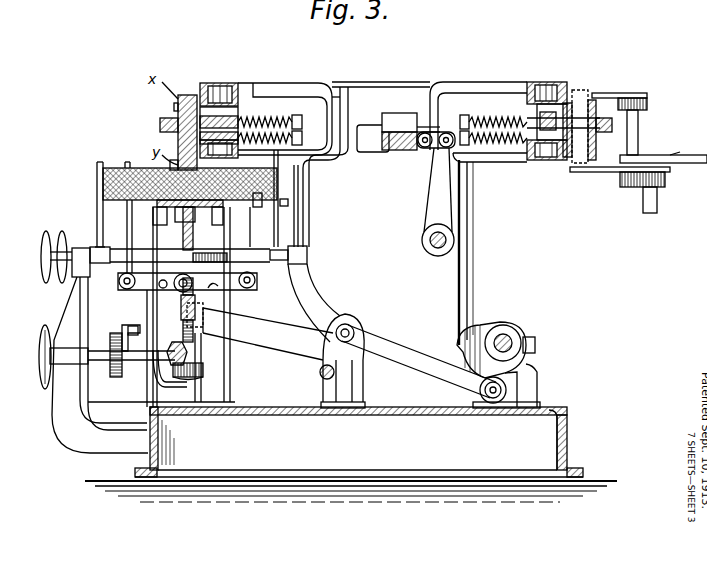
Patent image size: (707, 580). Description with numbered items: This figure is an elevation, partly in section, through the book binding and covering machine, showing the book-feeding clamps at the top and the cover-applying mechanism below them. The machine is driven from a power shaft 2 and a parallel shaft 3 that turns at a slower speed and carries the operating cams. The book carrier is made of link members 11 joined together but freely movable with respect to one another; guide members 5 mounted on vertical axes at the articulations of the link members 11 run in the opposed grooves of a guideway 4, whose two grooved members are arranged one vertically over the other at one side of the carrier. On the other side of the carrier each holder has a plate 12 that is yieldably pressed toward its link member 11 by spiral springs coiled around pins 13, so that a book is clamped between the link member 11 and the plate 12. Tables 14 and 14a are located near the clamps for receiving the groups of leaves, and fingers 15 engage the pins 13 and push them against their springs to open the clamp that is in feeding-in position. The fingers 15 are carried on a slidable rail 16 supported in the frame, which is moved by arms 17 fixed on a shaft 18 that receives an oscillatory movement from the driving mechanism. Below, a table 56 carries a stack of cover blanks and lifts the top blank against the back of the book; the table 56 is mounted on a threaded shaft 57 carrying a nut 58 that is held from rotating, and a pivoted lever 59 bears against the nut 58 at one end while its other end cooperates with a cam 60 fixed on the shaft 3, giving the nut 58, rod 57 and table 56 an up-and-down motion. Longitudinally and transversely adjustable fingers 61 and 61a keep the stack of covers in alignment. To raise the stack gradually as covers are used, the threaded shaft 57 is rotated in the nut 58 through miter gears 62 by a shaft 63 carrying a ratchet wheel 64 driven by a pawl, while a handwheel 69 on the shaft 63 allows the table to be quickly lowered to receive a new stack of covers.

The power shaft 2 is at (320, 374).
The shaft 3 is at (515, 326).
The guideway 4 is at (222, 91).
The guide members 5 is at (216, 95).
The link members 11 is at (568, 160).
The plate 12 is at (175, 118).
The pins 13 is at (498, 133).
The table 14 is at (611, 95).
The table 14a is at (612, 173).
The fingers 15 is at (446, 132).
The slidable rail 16 is at (391, 114).
The arms 17 is at (437, 190).
The shaft 18 is at (430, 244).
The table 56 is at (262, 201).
The threaded shaft 57 is at (195, 246).
The nut 58 is at (198, 304).
The pivoted lever 59 is at (376, 331).
The cam 60 is at (478, 328).
The fingers 61 is at (129, 163).
The fingers 61a is at (100, 162).
The miter gears 62 is at (200, 364).
The shaft 63 is at (136, 338).
The ratchet wheel 64 is at (112, 335).
The handwheel 69 is at (44, 342).